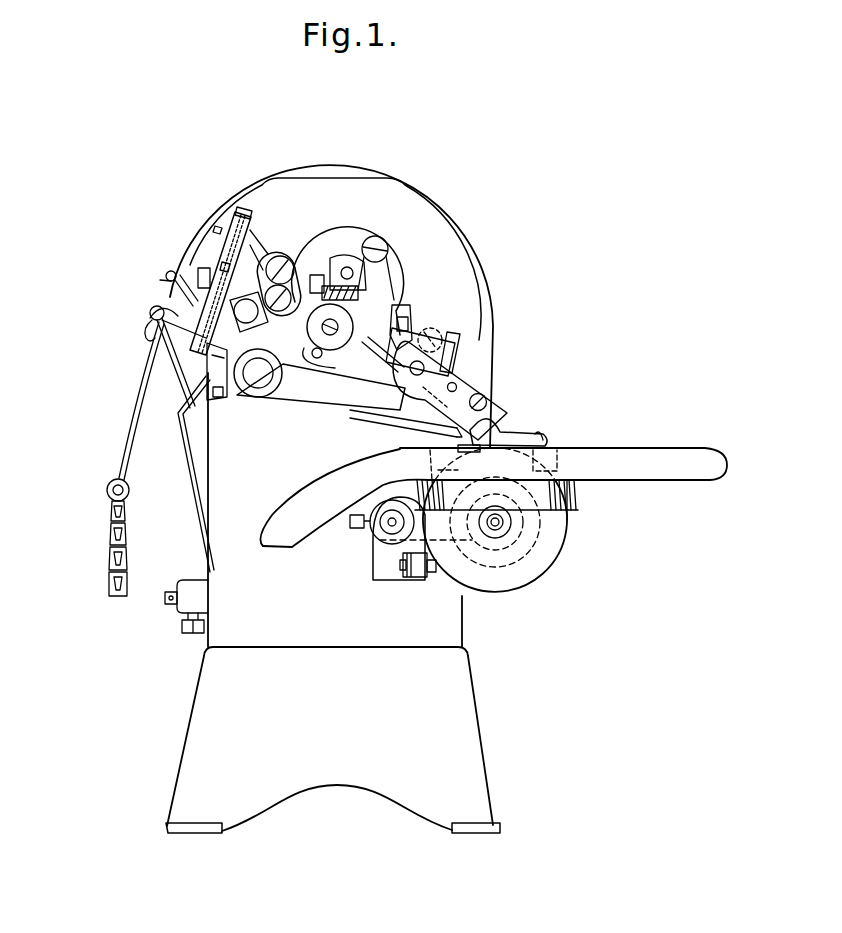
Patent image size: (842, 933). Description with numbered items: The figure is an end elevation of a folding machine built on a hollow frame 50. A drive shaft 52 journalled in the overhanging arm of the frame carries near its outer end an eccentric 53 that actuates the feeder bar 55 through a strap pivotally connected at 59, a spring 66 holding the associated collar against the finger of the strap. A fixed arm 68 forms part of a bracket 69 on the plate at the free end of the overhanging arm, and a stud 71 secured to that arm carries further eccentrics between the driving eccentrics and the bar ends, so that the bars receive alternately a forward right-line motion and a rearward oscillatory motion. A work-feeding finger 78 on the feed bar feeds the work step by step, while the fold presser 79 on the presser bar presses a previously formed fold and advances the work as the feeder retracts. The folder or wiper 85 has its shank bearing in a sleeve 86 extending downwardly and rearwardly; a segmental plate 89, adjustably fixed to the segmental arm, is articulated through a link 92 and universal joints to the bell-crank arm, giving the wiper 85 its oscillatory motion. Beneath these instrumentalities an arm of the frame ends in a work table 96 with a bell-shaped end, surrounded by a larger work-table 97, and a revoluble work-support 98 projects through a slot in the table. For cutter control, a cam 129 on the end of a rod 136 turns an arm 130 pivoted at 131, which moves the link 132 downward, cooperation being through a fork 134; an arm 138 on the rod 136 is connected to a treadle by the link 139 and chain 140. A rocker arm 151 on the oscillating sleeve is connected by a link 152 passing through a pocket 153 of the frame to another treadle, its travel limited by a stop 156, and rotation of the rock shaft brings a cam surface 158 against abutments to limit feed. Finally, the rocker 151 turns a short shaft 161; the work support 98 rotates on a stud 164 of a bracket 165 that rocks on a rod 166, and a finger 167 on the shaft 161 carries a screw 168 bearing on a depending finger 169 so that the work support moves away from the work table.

The hollow frame 50 is at (462, 612).
The drive shaft 52 is at (318, 328).
The eccentric 53 is at (400, 306).
The feeder bar 55 is at (486, 396).
The pivotal connection 59 is at (323, 356).
The spring 66 is at (355, 284).
The fixed arm 68 is at (440, 372).
The bracket 69 is at (312, 397).
The stud 71 is at (375, 418).
The work-feeding finger 78 is at (540, 433).
The fold presser 79 is at (536, 433).
The wiper 85 is at (262, 389).
The sleeve 86 is at (395, 428).
The segmental plate 89 is at (217, 399).
The link 92 is at (210, 264).
The work table 96 is at (578, 496).
The larger work-table 97 is at (632, 459).
The revoluble work-support 98 is at (548, 566).
The cam 129 is at (178, 303).
The arm 130 is at (341, 236).
The pivot 131 is at (297, 250).
The link 132 is at (382, 258).
The fork 134 is at (246, 299).
The rod 136 is at (188, 333).
The arm 138 is at (200, 275).
The link 139 is at (128, 417).
The chain 140 is at (106, 553).
The rocker arm 151 is at (170, 313).
The link 152 is at (177, 385).
The pocket 153 is at (197, 450).
The stop 156 is at (222, 245).
The cam surface 158 is at (432, 328).
The short shaft 161 is at (384, 532).
The stud 164 is at (508, 521).
The bracket 165 is at (434, 590).
The rod 166 is at (388, 523).
The finger 167 is at (416, 577).
The screw 168 is at (402, 577).
The finger 169 is at (385, 566).